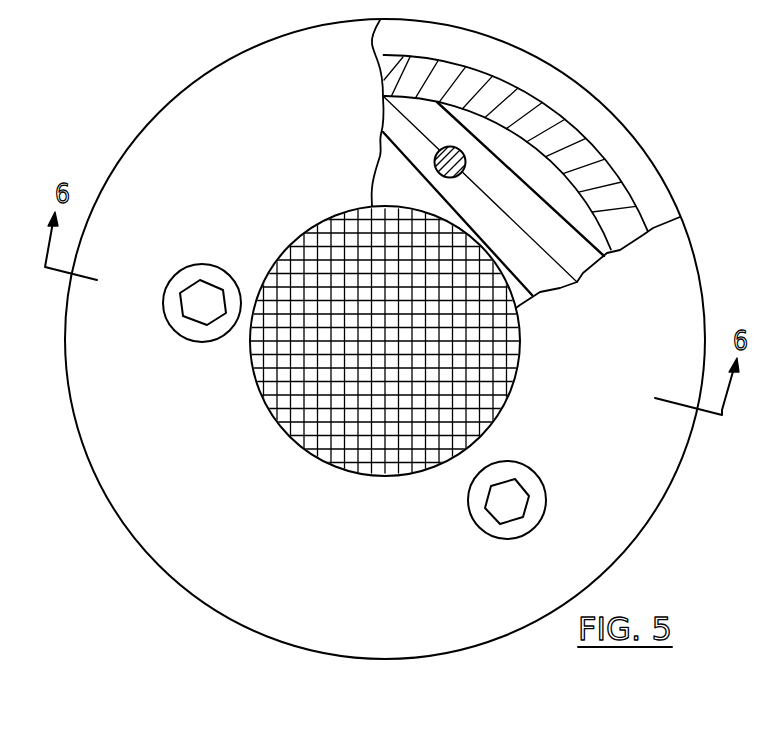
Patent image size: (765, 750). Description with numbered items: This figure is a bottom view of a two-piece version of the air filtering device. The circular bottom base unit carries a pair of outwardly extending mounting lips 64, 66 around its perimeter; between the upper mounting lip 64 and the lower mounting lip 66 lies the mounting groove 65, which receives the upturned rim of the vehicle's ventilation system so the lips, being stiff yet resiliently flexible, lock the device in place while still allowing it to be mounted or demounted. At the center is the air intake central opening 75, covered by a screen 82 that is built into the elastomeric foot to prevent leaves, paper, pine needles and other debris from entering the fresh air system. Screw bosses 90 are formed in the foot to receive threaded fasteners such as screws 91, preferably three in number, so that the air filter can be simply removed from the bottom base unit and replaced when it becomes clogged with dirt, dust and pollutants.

The mounting lip 64 is at (597, 100).
The mounting groove 65 is at (541, 85).
The lower mounting lip 66 is at (643, 148).
The central opening 75 is at (257, 393).
The screen 82 is at (350, 428).
The screw boss 90 is at (436, 159).
The screw 91 is at (205, 291).